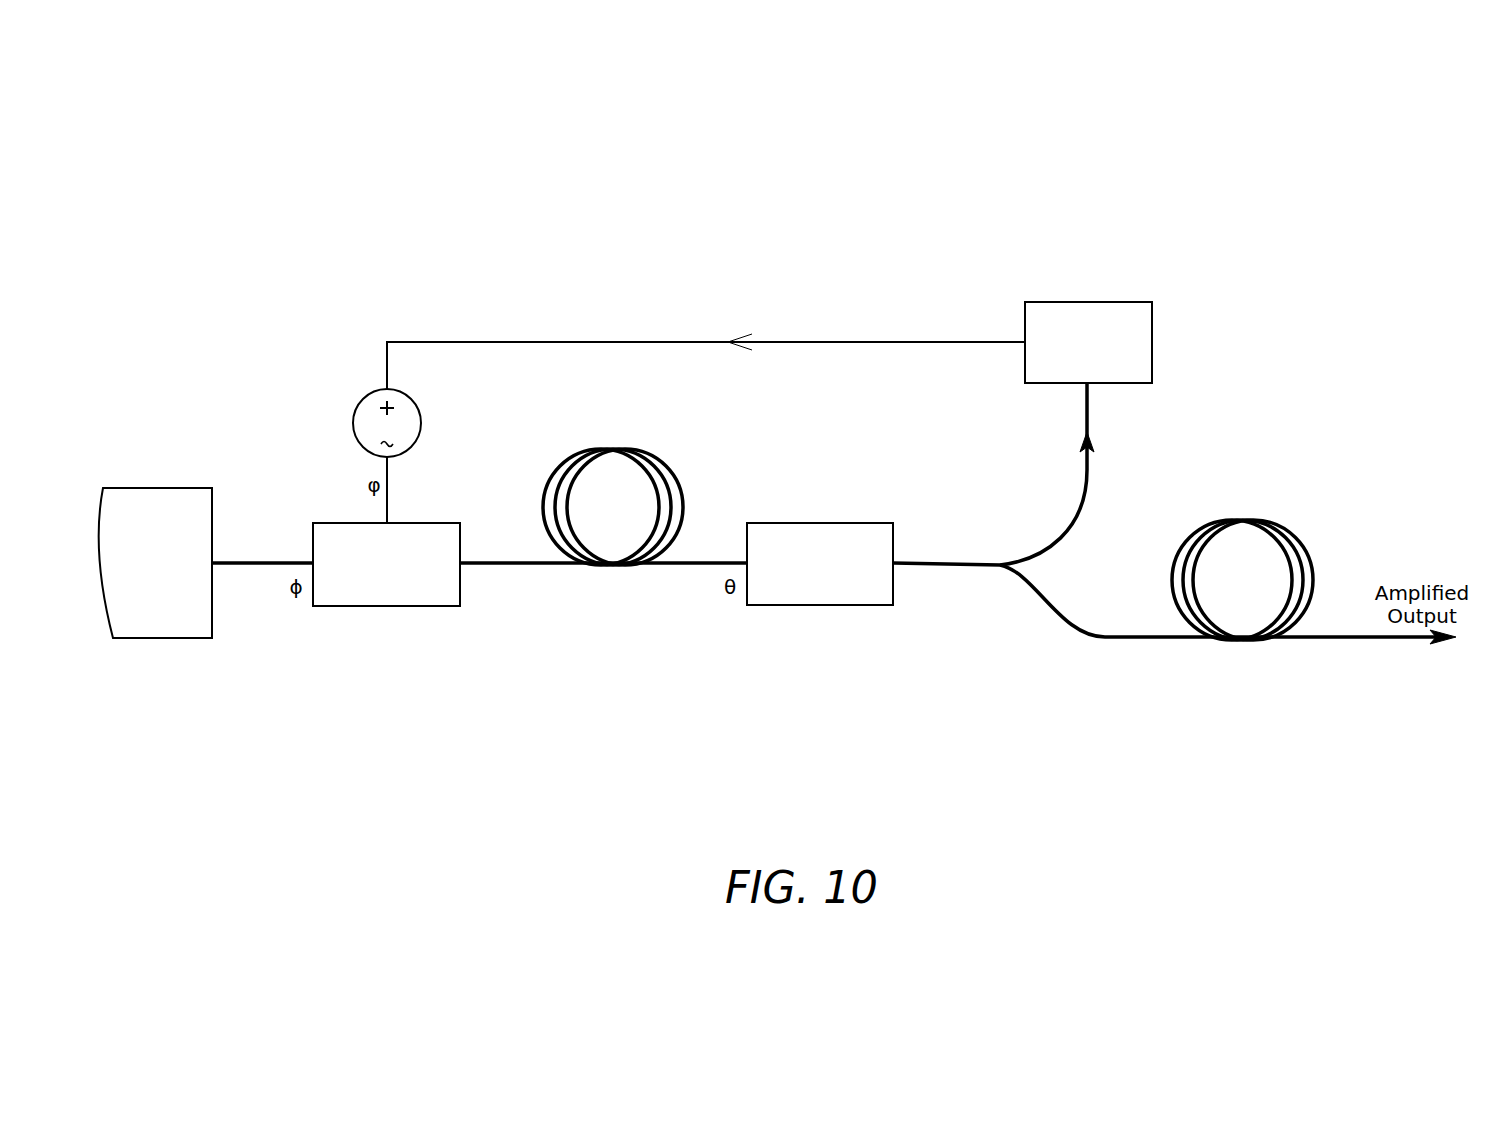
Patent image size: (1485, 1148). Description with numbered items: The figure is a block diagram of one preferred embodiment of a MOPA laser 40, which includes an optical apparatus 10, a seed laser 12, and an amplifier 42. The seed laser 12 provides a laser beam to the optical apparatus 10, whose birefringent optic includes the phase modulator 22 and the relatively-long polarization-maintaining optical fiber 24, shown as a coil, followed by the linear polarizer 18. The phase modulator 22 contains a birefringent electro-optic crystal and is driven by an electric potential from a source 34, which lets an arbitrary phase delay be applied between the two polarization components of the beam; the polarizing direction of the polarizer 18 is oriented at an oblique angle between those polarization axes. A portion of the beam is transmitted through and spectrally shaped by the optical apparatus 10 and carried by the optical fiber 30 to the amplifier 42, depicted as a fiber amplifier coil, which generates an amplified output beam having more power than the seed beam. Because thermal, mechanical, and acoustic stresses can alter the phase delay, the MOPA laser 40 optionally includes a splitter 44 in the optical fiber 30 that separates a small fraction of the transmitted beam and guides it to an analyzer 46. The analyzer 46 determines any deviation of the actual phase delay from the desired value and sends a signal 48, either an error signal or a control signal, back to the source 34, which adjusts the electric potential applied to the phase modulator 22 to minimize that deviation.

The optical apparatus 10 is at (612, 655).
The seed laser 12 is at (158, 497).
The linear polarizer 18 is at (835, 530).
The phase modulator 22 is at (430, 530).
The relatively-long polarization-maintaining optical fiber 24 is at (655, 452).
The optical fiber 30 is at (955, 559).
The source 34 is at (373, 399).
The MOPA laser 40 is at (1247, 205).
The amplifier 42 is at (1277, 520).
The splitter 44 is at (998, 571).
The analyzer 46 is at (1052, 306).
The signal 48 is at (588, 338).